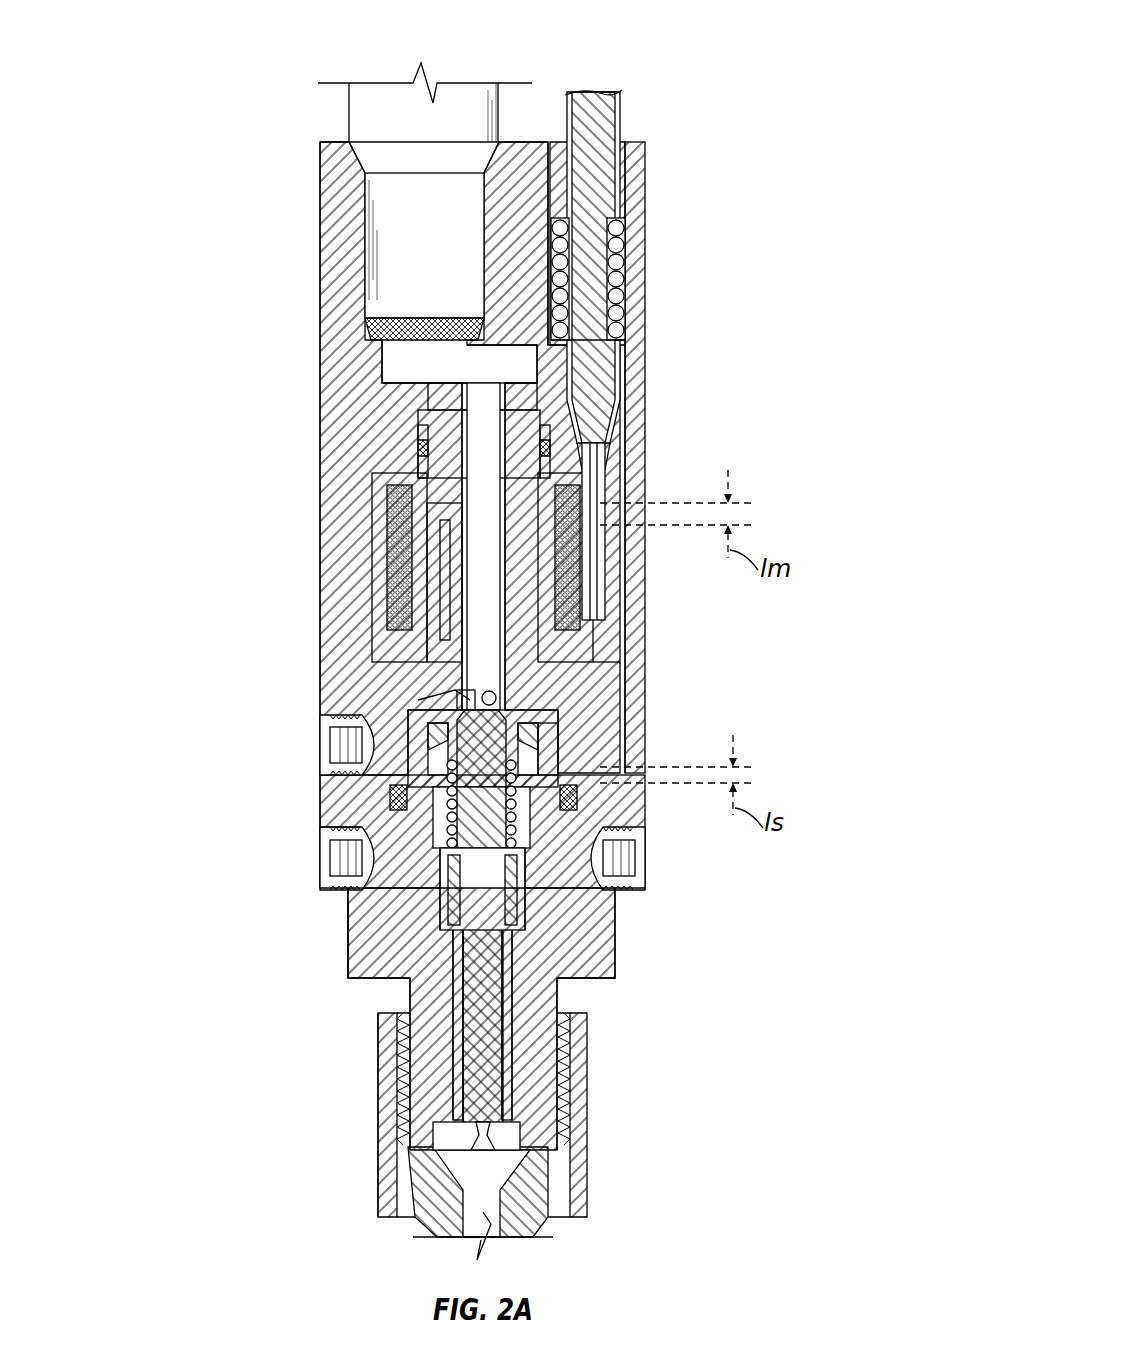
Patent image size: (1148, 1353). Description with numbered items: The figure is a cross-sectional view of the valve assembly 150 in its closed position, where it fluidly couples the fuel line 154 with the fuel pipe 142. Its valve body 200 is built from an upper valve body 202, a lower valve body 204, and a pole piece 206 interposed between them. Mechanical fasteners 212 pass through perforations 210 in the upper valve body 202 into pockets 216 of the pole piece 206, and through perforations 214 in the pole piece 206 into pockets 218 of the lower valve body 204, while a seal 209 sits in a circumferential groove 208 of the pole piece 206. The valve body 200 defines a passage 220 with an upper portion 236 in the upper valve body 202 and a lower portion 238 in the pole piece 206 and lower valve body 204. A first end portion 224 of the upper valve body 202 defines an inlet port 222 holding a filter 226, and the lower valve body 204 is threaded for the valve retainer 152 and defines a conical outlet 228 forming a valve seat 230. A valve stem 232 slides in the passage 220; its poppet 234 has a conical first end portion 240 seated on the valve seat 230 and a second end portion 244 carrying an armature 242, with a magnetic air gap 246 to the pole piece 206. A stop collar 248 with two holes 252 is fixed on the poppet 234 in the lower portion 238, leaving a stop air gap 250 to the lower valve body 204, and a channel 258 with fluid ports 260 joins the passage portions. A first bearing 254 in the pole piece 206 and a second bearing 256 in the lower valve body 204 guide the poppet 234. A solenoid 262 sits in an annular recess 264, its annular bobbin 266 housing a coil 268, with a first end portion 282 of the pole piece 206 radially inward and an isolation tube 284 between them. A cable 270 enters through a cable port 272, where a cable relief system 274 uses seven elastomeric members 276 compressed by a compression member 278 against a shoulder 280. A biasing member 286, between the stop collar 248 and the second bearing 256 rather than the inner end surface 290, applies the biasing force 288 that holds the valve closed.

The valve assembly 150 is at (720, 60).
The fuel line 154 is at (349, 117).
The first end portion of the upper valve body 224 is at (320, 158).
The upper valve body 202 is at (320, 262).
The inlet port 222 is at (380, 255).
The filter 226 is at (420, 318).
The second end portion of the poppet 244 is at (520, 382).
The valve stem 232 is at (428, 398).
The armature 242 is at (428, 420).
The poppet 234 is at (462, 447).
The solenoid 262 is at (372, 485).
The magnetic air gap 246 is at (430, 515).
The first bearing 254 is at (462, 558).
The first end portion of the pole piece 282 is at (440, 590).
The valve body 200 is at (320, 586).
The annular recess 264 is at (455, 690).
The fluid ports 260 is at (482, 700).
The pockets of the pole piece 216 is at (457, 700).
The perforations of the upper valve body 210 is at (425, 730).
The holes of the stop collar 252 is at (440, 745).
The mechanical fasteners 212 is at (332, 745).
The pole piece 206 is at (320, 800).
The circumferential groove 208 is at (398, 797).
The seal 209 is at (345, 858).
The perforations of the pole piece 214 is at (345, 882).
The pockets of the lower valve body 218 is at (365, 915).
The passage 220 is at (440, 828).
The second bearing 256 is at (430, 920).
The lower valve body 204 is at (350, 990).
The lower portion of the passage 238 is at (545, 700).
The first end portion of the poppet 240 is at (450, 1140).
The valve retainer 152 is at (378, 1132).
The fuel pipe 142 is at (415, 1226).
The cable 270 is at (600, 120).
The compression member 278 is at (640, 162).
The cable relief system 274 is at (650, 200).
The elastomeric members 276 is at (628, 325).
The shoulder of the cable port 280 is at (620, 336).
The upper portion of the passage 236 is at (525, 376).
The cable port 272 is at (636, 430).
The channel 258 is at (592, 462).
The isolation tube 284 is at (605, 556).
The coil 268 is at (580, 590).
The annular bobbin 266 is at (605, 650).
The stop collar 248 is at (560, 730).
The stop air gap 250 is at (542, 776).
The biasing member 286 is at (578, 800).
The biasing force arrow 288 is at (520, 915).
The inner end surface of the lower valve body 290 is at (525, 940).
The valve seat 230 is at (572, 1115).
The outlet 228 is at (540, 1160).